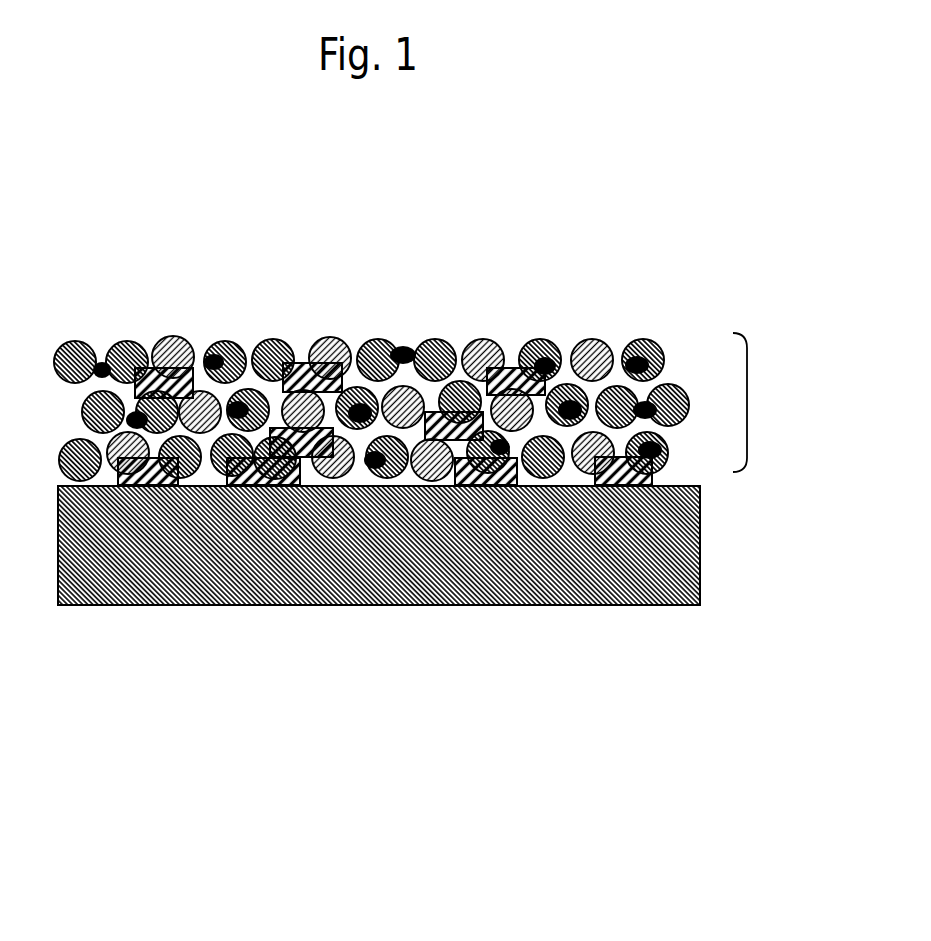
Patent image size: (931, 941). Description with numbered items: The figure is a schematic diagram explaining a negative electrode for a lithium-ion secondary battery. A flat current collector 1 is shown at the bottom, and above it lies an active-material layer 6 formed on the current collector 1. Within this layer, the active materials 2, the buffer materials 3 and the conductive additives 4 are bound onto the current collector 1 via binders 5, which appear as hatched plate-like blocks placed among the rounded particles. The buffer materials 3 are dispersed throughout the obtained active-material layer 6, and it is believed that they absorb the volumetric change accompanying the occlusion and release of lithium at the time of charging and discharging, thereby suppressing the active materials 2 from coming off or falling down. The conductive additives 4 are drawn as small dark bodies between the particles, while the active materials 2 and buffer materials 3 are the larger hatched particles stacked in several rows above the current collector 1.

The current collector 1 is at (243, 575).
The active material 2 is at (283, 340).
The buffer material 3 is at (487, 345).
The conductive additive 4 is at (642, 357).
The binder 5 is at (158, 368).
The active-material layer 6 is at (449, 323).